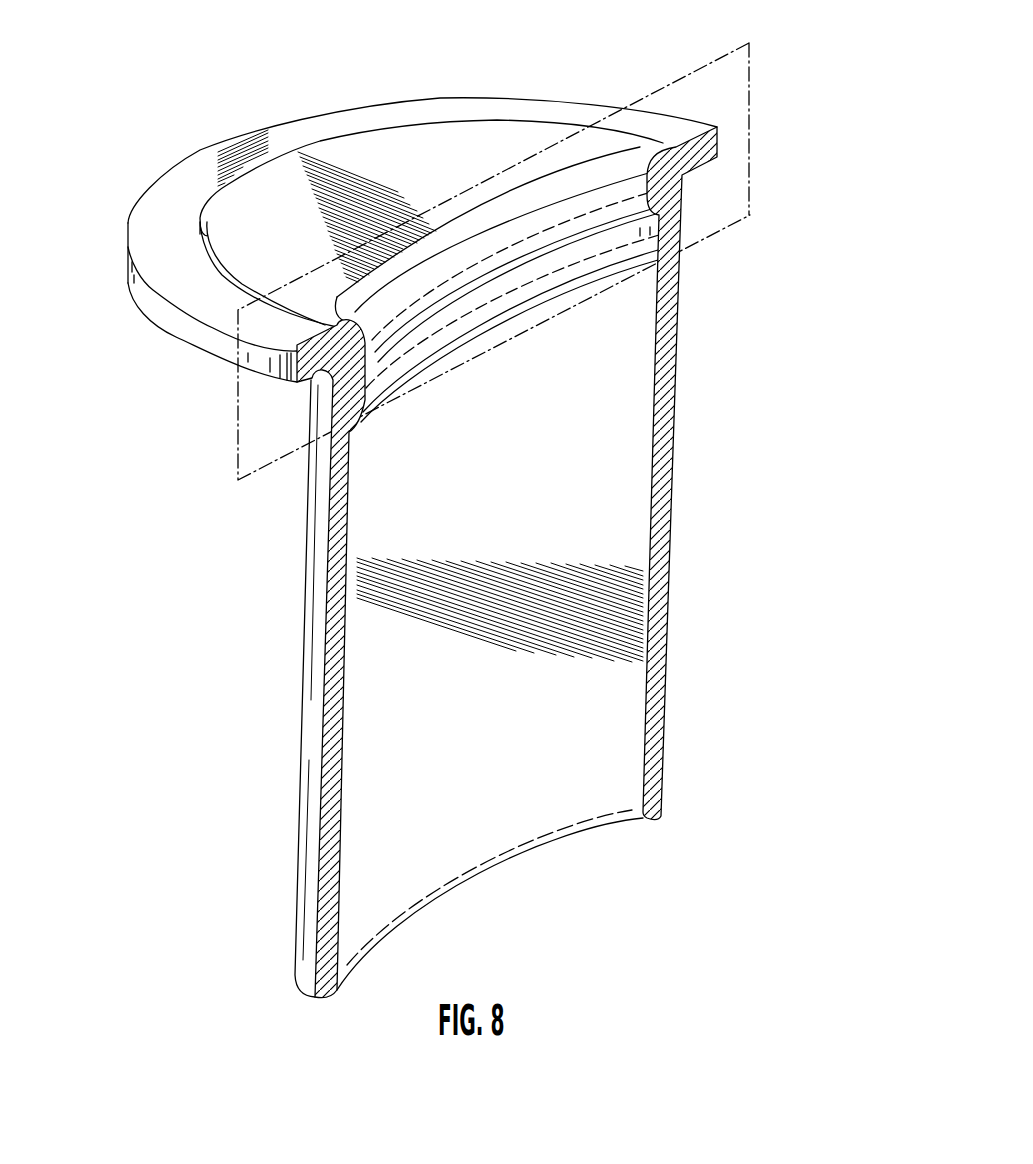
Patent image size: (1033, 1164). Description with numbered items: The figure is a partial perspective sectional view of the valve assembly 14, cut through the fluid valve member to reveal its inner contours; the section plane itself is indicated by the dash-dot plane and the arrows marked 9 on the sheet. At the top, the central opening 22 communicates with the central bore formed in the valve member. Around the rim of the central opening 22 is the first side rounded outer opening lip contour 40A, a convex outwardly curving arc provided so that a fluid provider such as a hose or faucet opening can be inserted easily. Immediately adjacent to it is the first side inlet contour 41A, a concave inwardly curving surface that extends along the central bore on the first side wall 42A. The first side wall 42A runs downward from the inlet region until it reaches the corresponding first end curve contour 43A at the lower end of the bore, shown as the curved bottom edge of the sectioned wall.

The valve assembly 14 is at (157, 124).
The central opening 22 is at (597, 153).
The section line 9- 9 is at (563, 140).
The first side rounded outer opening lip contour 40A is at (632, 191).
The first side inlet contour 41A is at (635, 238).
The first side wall 42A is at (368, 810).
The first end curve contour 43A is at (383, 953).